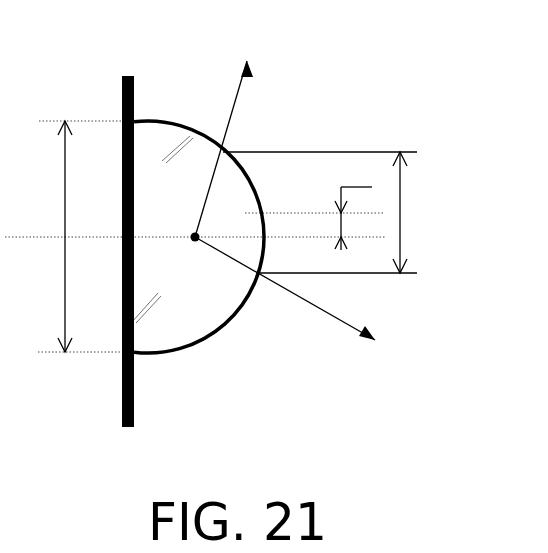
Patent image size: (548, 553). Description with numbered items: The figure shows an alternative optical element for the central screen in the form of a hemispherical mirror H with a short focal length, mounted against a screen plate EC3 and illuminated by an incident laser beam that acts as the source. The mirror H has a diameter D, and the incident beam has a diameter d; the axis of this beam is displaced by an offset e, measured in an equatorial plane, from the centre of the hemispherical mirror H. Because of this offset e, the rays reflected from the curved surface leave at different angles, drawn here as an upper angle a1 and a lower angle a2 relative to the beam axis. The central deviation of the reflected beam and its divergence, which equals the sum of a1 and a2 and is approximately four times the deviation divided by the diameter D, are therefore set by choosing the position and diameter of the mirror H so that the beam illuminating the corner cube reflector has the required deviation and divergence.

The electrode / contact plate EC3 is at (135, 402).
The hemispherical mirror H is at (180, 337).
The deviation angle component a1 is at (234, 108).
The deviation angle component a2 is at (323, 273).
The diameter of the hemispherical mirror D is at (58, 236).
The diameter of the incident beam d is at (409, 212).
The offset of the beam e is at (353, 208).